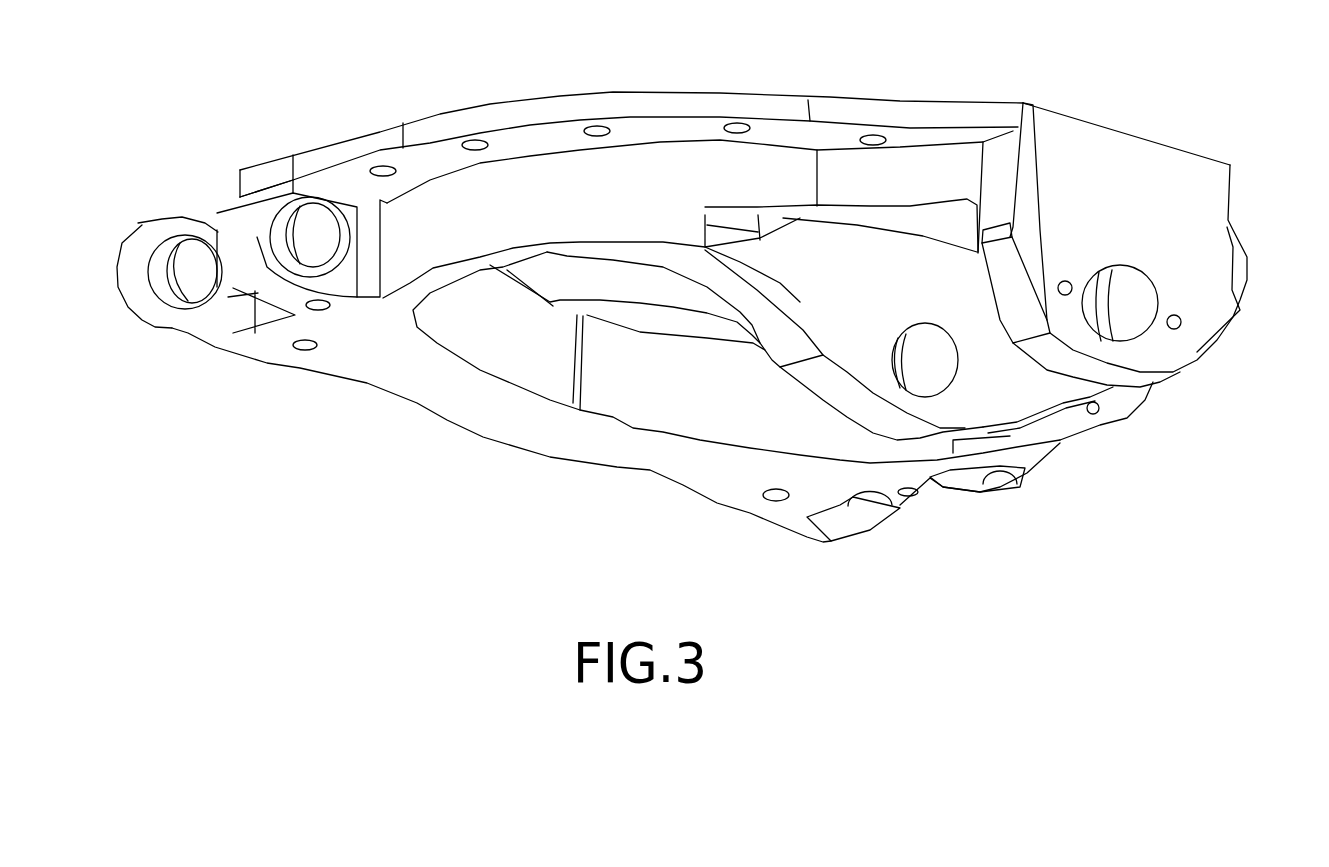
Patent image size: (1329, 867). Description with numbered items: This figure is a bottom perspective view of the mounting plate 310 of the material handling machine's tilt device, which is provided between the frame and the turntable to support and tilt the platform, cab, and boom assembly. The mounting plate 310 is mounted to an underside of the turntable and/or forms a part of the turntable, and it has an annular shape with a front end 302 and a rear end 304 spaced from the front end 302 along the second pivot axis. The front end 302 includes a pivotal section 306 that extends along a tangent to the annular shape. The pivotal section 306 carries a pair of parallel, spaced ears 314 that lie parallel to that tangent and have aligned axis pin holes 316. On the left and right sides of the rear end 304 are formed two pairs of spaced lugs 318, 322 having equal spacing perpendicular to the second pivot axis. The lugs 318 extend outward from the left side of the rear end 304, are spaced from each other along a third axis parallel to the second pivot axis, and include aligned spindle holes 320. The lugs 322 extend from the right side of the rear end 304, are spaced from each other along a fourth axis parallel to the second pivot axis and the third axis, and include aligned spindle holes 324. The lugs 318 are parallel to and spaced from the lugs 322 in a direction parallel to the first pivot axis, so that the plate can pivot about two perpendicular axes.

The front end 302 is at (1125, 145).
The rear end 304 is at (367, 340).
The pivotal section 306 is at (852, 163).
The mounting plate 310 is at (468, 459).
The ears 314 is at (1170, 361).
The axis pin holes 316 is at (1143, 304).
The lugs 318 is at (823, 530).
The spindle holes 320 is at (869, 504).
The lugs 322 is at (255, 260).
The spindle holes 324 is at (190, 252).